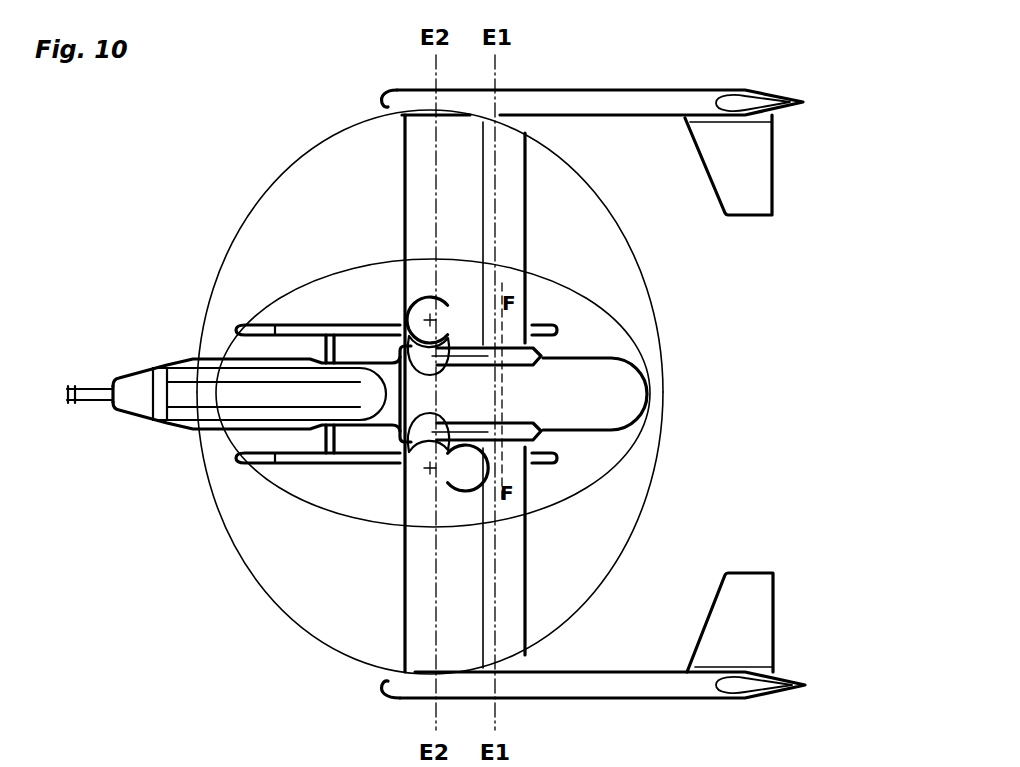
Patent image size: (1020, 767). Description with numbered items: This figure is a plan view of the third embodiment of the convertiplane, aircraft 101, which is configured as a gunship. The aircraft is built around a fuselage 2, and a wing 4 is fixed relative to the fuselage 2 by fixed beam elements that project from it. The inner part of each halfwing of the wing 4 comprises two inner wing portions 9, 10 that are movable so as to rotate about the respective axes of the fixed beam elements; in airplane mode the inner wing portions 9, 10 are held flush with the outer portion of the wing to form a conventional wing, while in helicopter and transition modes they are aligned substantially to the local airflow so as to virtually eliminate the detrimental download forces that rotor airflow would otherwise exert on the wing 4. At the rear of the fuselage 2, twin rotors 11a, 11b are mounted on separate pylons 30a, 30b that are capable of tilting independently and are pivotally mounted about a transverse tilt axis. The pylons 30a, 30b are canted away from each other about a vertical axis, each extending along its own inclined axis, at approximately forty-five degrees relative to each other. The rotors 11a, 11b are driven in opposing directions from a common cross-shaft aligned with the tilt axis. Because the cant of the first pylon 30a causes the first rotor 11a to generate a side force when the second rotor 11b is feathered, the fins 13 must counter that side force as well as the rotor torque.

The aircraft 101 is at (155, 215).
The fuselage 2 is at (165, 362).
The wing 4 is at (403, 215).
The inner wing portion 9 is at (505, 222).
The inner wing portion 10 is at (455, 213).
The first rotor 11a is at (590, 250).
The second rotor 11b is at (597, 533).
The fin 13 is at (730, 167).
The first pylon 30a is at (537, 352).
The second pylon 30b is at (537, 437).